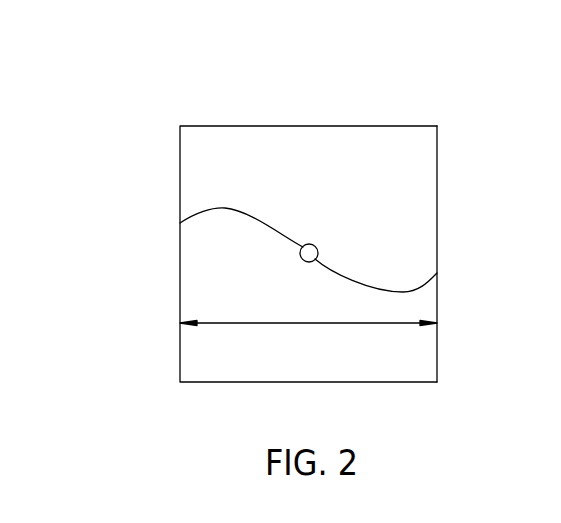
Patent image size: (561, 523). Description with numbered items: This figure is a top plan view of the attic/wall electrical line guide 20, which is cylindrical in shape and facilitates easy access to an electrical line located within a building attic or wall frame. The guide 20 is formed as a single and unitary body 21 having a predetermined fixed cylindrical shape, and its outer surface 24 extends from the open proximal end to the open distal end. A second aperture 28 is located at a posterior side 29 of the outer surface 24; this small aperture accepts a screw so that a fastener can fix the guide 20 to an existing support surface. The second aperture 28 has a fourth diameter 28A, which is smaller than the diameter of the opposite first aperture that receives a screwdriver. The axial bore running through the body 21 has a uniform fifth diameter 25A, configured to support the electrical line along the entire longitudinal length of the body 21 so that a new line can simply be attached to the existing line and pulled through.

The electrical line guide 20 is at (118, 112).
The single and unitary body 21 is at (343, 163).
The outer surface 24 is at (413, 206).
The second aperture 28 is at (180, 223).
The fourth diameter 28A is at (437, 273).
The posterior side 29 is at (202, 298).
The fifth diameter 25A is at (272, 324).